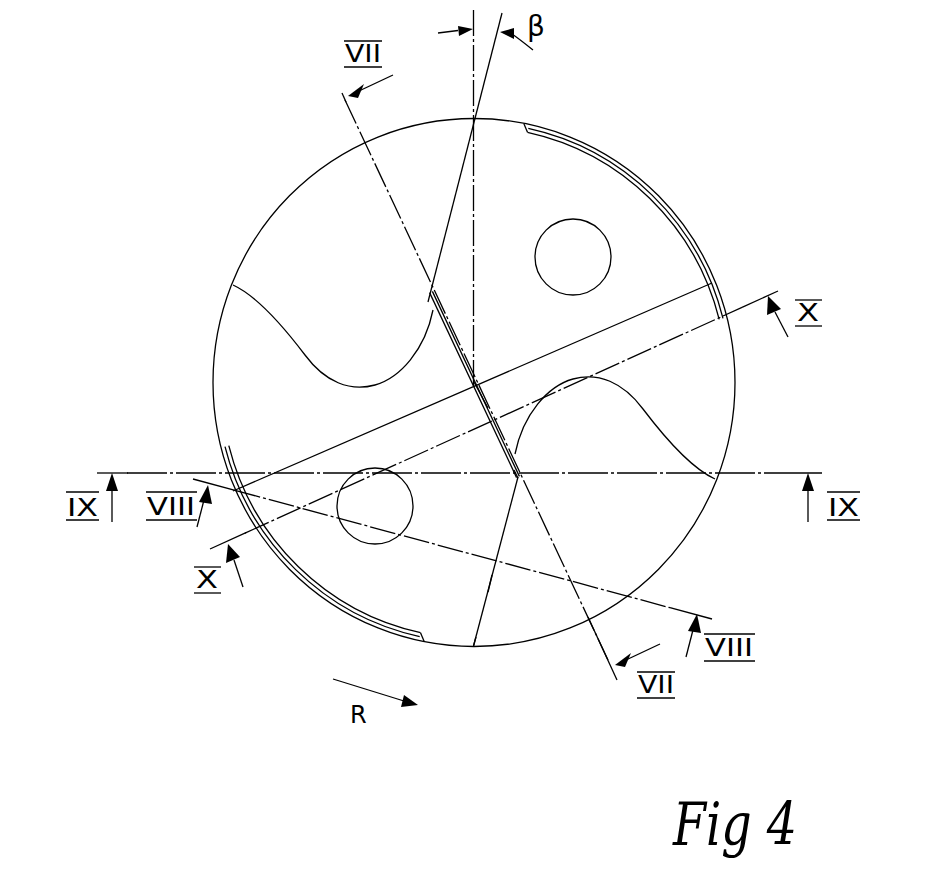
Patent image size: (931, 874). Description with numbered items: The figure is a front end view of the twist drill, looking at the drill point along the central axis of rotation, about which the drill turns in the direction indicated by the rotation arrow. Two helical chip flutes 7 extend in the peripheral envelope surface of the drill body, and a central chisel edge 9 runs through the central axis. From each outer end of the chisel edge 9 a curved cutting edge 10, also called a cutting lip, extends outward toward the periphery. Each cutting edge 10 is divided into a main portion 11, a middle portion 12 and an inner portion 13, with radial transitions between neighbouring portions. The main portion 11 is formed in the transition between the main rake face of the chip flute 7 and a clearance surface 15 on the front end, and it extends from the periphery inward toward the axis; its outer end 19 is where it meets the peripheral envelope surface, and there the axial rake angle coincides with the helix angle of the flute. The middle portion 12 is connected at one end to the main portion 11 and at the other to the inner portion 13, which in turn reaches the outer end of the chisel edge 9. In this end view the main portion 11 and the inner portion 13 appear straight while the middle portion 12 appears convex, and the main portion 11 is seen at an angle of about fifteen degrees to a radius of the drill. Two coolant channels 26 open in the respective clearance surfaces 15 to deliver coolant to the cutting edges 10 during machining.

The helical chip flute 7 is at (288, 259).
The central chisel edge 9 is at (472, 388).
The cutting edge 10 is at (452, 208).
The main portion 11 is at (490, 590).
The middle portion 12 is at (518, 481).
The inner portion 13 is at (488, 405).
The clearance surface 15 is at (429, 594).
The outer end of the main portion 19 is at (473, 650).
The coolant channel 26 is at (366, 542).